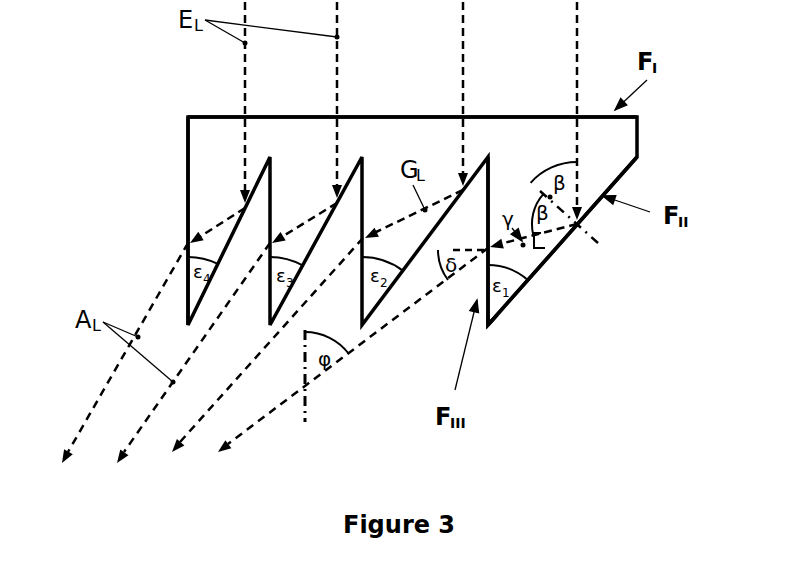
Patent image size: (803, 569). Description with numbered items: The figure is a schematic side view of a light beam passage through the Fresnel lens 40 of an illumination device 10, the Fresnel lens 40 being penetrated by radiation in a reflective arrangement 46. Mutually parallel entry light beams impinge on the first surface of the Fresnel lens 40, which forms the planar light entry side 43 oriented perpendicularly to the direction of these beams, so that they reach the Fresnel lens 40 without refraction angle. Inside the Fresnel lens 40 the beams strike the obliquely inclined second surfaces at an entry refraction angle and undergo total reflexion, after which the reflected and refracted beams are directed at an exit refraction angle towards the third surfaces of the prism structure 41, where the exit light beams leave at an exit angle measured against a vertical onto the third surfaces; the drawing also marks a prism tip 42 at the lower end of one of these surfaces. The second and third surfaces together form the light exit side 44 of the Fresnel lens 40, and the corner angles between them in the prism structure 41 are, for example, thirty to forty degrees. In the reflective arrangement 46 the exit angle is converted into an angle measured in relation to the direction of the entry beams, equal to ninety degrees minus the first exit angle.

The illumination device 10 is at (125, 65).
The Fresnel lens 40 is at (224, 166).
The prism structure 41 is at (503, 325).
The prism tip edge 42 is at (490, 327).
The planar light entry side 43 is at (392, 117).
The light exit side 44 is at (487, 260).
The reflective arrangement 46 is at (172, 187).